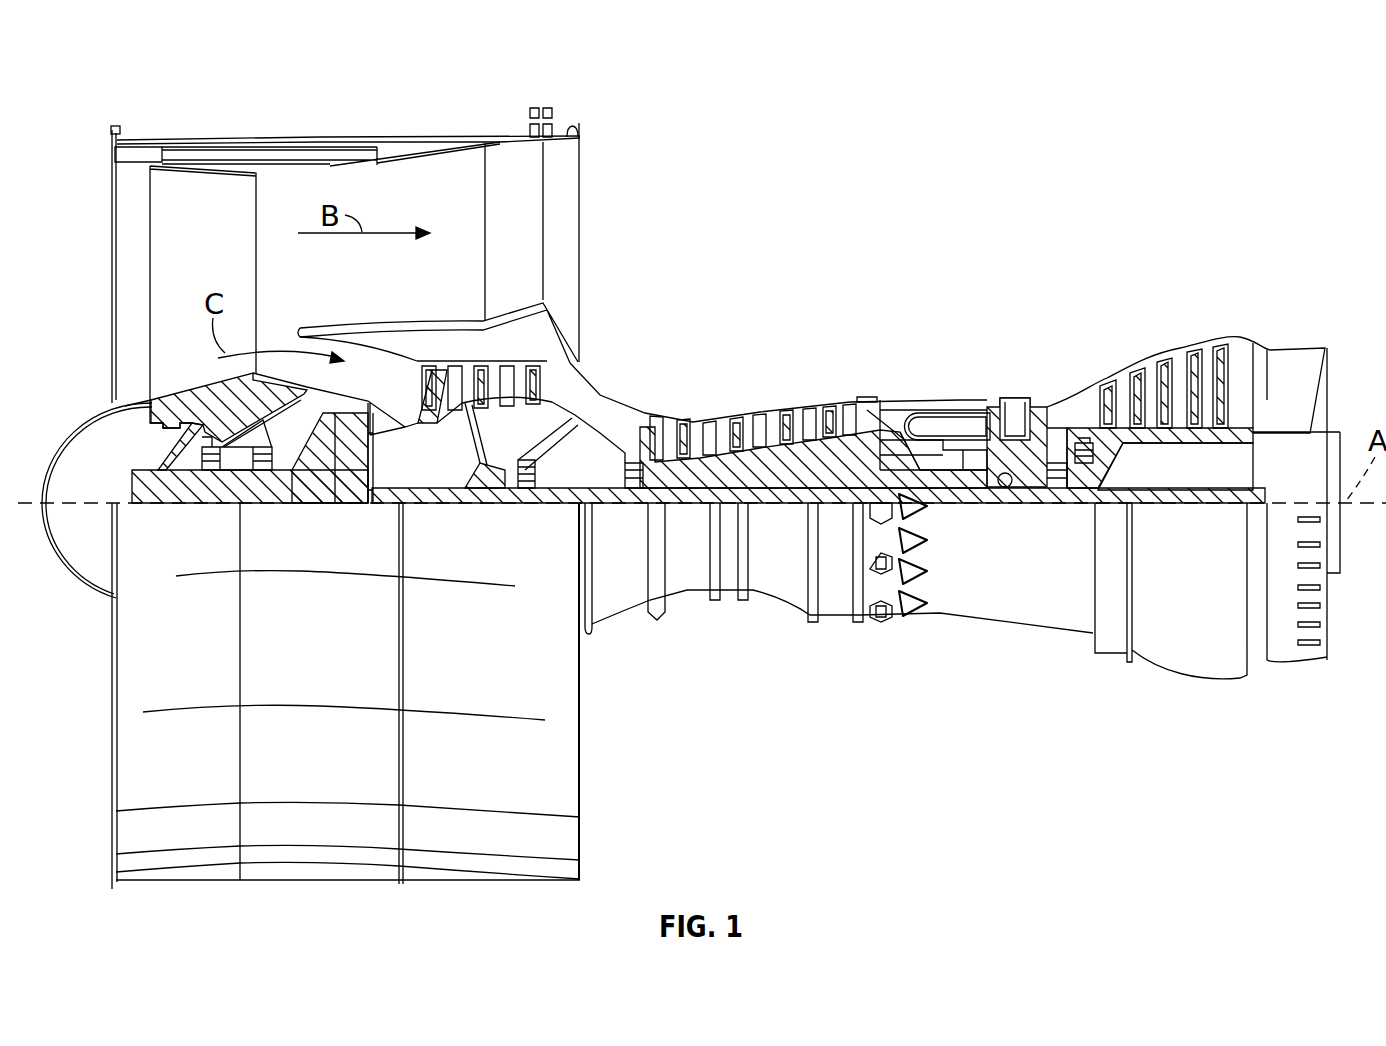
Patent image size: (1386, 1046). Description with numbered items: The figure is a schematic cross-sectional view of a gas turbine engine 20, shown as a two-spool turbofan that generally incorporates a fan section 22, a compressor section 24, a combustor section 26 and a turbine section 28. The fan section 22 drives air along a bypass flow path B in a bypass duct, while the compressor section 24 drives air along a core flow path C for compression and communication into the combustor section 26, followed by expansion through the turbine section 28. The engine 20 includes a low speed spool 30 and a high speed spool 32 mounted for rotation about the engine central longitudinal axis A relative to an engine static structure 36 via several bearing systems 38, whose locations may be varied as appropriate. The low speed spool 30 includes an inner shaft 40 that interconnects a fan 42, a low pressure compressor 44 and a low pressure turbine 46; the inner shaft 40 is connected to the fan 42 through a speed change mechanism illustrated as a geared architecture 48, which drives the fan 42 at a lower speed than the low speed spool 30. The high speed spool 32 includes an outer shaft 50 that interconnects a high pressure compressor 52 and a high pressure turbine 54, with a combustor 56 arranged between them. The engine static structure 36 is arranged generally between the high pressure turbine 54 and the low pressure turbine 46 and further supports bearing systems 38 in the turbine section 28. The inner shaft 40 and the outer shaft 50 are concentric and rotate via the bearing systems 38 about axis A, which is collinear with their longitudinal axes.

The gas turbine engine 20 is at (1187, 187).
The fan section 22 is at (298, 130).
The compressor section 24 is at (800, 343).
The combustor section 26 is at (933, 342).
The turbine section 28 is at (1074, 342).
The low speed spool 30 is at (789, 503).
The high speed spool 32 is at (843, 448).
The engine static structure 36 is at (840, 615).
The bearing systems 38 is at (215, 462).
The inner shaft 40 is at (611, 500).
The fan 42 is at (218, 265).
The low pressure compressor 44 is at (492, 365).
The low pressure turbine 46 is at (1177, 363).
The geared architecture 48 is at (353, 483).
The outer shaft 50 is at (1007, 486).
The high pressure compressor 52 is at (750, 470).
The high pressure turbine 54 is at (1012, 398).
The combustor 56 is at (944, 425).